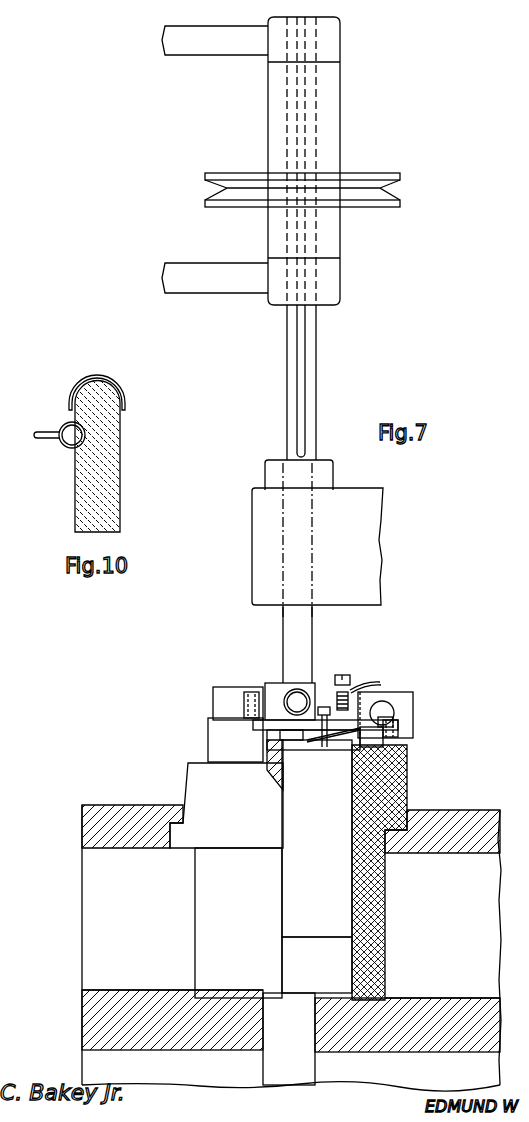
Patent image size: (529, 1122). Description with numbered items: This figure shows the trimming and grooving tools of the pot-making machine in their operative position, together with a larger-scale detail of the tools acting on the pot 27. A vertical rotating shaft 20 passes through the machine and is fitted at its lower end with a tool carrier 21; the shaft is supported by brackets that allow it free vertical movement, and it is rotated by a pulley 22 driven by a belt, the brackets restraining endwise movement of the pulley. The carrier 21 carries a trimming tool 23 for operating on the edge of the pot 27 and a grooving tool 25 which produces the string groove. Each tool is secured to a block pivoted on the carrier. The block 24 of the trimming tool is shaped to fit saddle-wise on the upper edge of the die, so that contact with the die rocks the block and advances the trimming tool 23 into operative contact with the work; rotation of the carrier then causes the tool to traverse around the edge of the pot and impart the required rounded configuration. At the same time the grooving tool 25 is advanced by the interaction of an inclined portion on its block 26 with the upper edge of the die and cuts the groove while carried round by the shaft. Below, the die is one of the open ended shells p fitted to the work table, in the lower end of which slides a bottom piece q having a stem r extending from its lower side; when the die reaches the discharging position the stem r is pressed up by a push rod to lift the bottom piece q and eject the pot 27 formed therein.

In FIG. 7, the shaft 20 is at (298, 629).
In FIG. 7, the tool carrier 21 is at (225, 700).
In FIG. 7, the pulley 22 is at (377, 197).
In FIG. 7, the trimming tool 23 is at (322, 738).
In FIG. 10, the trimming tool 23 is at (121, 404).
In FIG. 7, the block 24 is at (222, 744).
In FIG. 7, the grooving tool 25 is at (343, 748).
In FIG. 10, the grooving tool 25 is at (60, 445).
In FIG. 7, the block 26 is at (383, 743).
In FIG. 7, the pot 27 is at (309, 838).
In FIG. 10, the pot 27 is at (112, 487).
In FIG. 7, the open ended shell p is at (198, 783).
In FIG. 7, the sliding bottom piece q is at (327, 963).
In FIG. 7, the stem r is at (292, 1070).